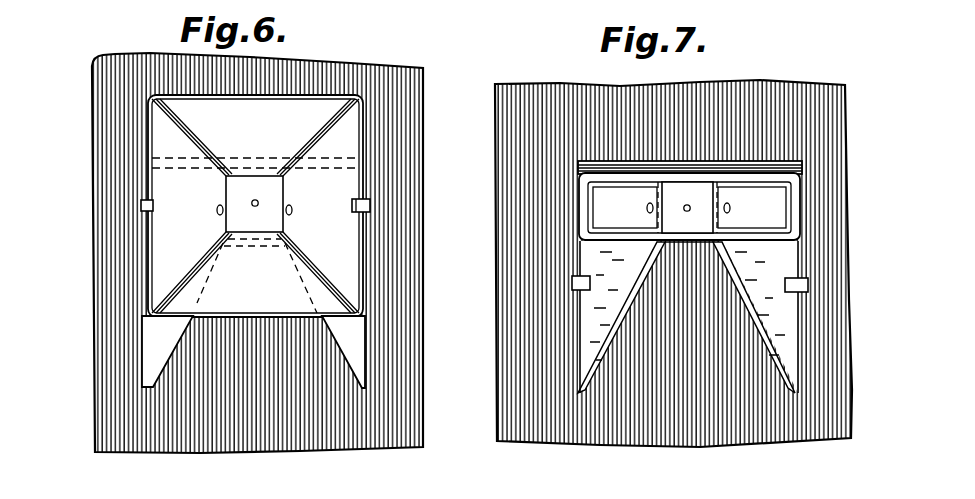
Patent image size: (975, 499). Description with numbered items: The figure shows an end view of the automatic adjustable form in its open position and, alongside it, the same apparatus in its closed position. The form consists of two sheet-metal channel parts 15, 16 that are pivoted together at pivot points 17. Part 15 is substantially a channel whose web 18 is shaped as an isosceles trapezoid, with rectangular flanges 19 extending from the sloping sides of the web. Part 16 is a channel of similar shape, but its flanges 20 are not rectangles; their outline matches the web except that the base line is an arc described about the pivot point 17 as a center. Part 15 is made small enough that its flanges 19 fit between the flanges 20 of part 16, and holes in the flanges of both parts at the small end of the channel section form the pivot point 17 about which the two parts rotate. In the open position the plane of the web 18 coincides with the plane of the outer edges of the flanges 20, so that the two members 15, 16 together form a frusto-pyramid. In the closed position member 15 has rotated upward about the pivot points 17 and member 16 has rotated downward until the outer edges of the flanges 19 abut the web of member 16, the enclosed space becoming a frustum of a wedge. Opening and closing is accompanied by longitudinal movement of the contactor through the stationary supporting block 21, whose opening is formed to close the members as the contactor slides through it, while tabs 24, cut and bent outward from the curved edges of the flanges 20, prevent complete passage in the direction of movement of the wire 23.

In FIG. 6, the part 15 is at (237, 320).
In FIG. 7, the part 15 is at (680, 243).
In FIG. 6, the part 16 is at (327, 100).
In FIG. 7, the part 16 is at (682, 176).
In FIG. 6, the pivot point 17 is at (284, 208).
In FIG. 7, the pivot point 17 is at (723, 208).
In FIG. 6, the web 18 is at (269, 305).
In FIG. 6, the flanges 19 is at (343, 278).
In FIG. 7, the flanges 19 is at (597, 197).
In FIG. 6, the flanges 20 is at (162, 147).
In FIG. 7, the flanges 20 is at (590, 342).
In FIG. 6, the stationary supporting block 21 is at (513, 440).
In FIG. 6, the wire 23 is at (254, 217).
In FIG. 7, the wire 23 is at (688, 221).
In FIG. 6, the tabs 24 is at (143, 204).
In FIG. 7, the tabs 24 is at (572, 280).